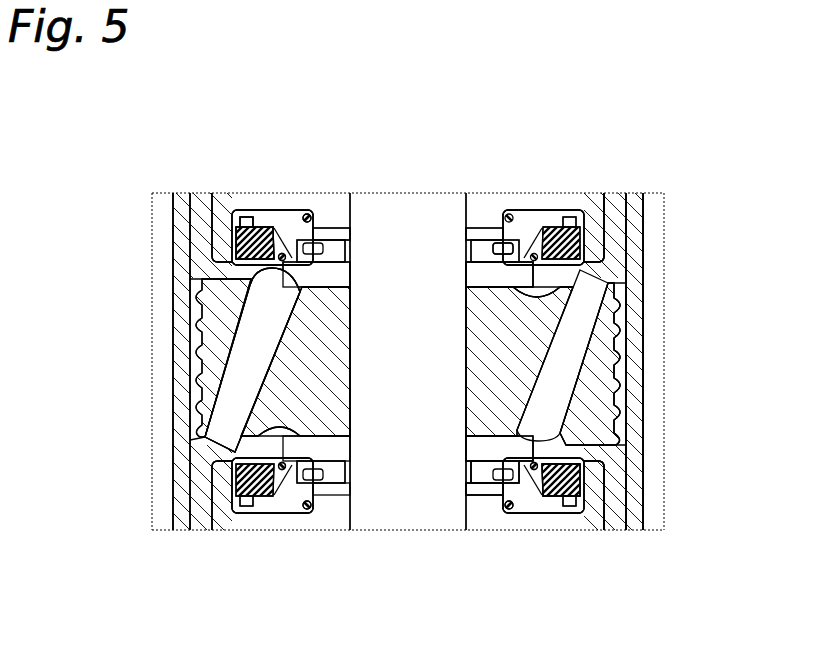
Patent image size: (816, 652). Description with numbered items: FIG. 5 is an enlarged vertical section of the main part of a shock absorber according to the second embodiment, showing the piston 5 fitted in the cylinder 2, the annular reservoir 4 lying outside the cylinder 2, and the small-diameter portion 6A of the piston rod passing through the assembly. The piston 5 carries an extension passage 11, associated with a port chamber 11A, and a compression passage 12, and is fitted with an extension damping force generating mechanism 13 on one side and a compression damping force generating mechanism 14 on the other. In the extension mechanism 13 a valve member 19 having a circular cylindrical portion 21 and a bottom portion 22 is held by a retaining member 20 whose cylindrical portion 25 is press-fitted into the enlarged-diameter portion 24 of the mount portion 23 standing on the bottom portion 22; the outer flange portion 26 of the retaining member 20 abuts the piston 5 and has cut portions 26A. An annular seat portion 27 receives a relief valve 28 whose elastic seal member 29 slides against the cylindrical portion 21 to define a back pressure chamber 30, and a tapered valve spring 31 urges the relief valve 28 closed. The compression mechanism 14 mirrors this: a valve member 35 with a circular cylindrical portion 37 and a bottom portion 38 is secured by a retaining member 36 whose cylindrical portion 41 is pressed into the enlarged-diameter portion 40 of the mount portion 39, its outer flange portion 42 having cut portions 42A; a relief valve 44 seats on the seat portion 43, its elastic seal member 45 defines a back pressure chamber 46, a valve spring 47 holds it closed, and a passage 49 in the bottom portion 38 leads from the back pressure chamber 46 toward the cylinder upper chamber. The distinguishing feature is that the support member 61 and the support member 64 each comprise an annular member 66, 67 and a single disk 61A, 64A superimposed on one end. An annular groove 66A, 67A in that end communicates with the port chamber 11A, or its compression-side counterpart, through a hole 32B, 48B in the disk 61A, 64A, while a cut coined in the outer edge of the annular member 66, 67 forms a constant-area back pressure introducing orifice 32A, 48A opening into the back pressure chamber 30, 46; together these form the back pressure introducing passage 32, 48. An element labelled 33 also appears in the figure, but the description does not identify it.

The cylinder 2 is at (635, 212).
The annular reservoir 4 is at (650, 212).
The piston 5 is at (620, 356).
The small-diameter portion 6A is at (392, 215).
The extension passage 11 is at (600, 332).
The port chamber 11A is at (605, 395).
The compression passage 12 is at (247, 353).
The extension damping force generating mechanism 13 is at (621, 510).
The compression damping force generating mechanism 14 is at (203, 238).
The valve member 19 is at (190, 522).
The retaining member 20 is at (300, 420).
The circular cylindrical portion 21 is at (233, 492).
The bottom portion 22 is at (272, 512).
The mount portion 23 is at (308, 512).
The enlarged-diameter portion 24 is at (470, 490).
The cylindrical portion 25 is at (330, 495).
The outer flange portion 26 is at (290, 440).
The cut portions 26A is at (465, 428).
The seat portion 27 is at (582, 462).
The relief valve 28 is at (585, 485).
The elastic seal member 29 is at (576, 500).
The back pressure chamber 30 is at (566, 512).
The valve spring 31 is at (515, 500).
The back pressure introducing passage 32 is at (556, 597).
The back pressure introducing orifice 32A is at (530, 490).
The hole 32B is at (556, 482).
The seal case 33 is at (588, 520).
The valve member 35 is at (592, 228).
The retaining member 36 is at (445, 240).
The circular cylindrical portion 37 is at (598, 262).
The bottom portion 38 is at (538, 226).
The mount portion 39 is at (515, 228).
The enlarged-diameter portion 40 is at (460, 275).
The cylindrical portion 41 is at (480, 240).
The outer flange portion 42 is at (585, 266).
The cut portions 42A is at (245, 280).
The seat portion 43 is at (283, 273).
The relief valve 44 is at (262, 266).
The elastic seal member 45 is at (247, 263).
The back pressure chamber 46 is at (236, 224).
The valve spring 47 is at (498, 235).
The back pressure introducing passage 48 is at (270, 124).
The back pressure introducing orifice 48A is at (268, 230).
The hole 48B is at (246, 226).
The passage 49 is at (284, 211).
The support member 61 is at (258, 505).
The disk 61A is at (470, 468).
The support member 64 is at (562, 228).
The disk 64A is at (340, 245).
The annular member 66 is at (307, 506).
The annular groove 66A is at (506, 506).
The annular member 67 is at (322, 228).
The annular groove 67A is at (306, 214).